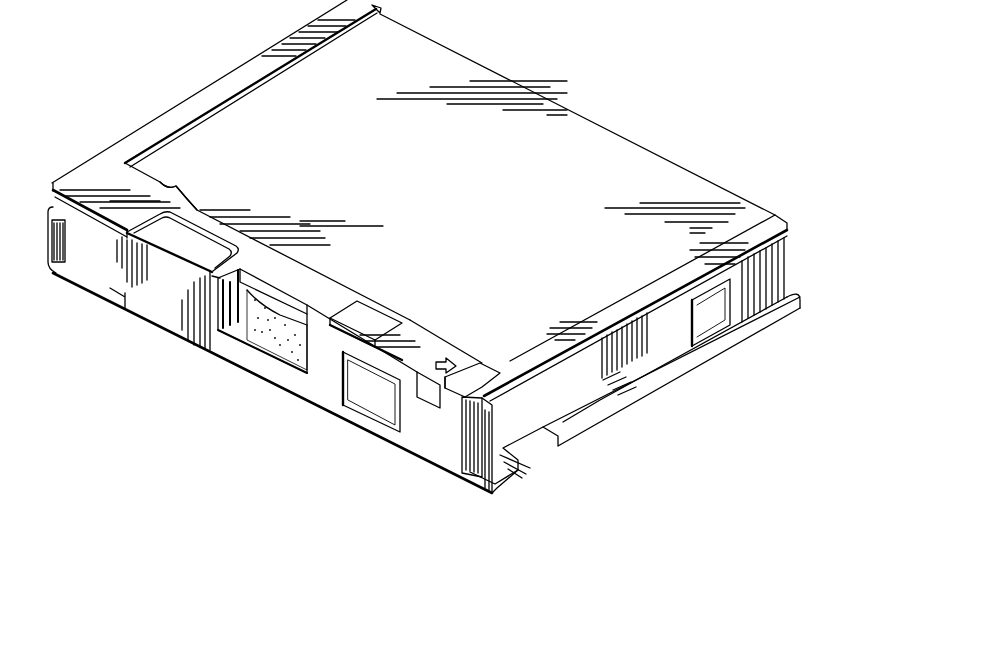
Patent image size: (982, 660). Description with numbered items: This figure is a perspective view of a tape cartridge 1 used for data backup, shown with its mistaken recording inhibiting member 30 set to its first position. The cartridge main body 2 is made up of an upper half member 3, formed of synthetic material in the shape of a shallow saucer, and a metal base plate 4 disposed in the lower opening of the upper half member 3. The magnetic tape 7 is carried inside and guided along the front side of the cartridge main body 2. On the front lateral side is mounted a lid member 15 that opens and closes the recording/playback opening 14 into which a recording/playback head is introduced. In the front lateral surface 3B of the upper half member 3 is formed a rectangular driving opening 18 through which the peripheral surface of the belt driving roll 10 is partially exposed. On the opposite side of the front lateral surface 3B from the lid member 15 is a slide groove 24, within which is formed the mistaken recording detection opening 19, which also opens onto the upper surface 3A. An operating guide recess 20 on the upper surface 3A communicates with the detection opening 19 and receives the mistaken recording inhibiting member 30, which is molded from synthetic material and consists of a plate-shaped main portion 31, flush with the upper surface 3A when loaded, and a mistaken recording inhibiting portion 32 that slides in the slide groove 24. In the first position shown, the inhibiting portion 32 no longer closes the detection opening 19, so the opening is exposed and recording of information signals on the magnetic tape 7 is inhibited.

The tape cartridge 1 is at (590, 72).
The cartridge main body 2 is at (846, 190).
The upper half member 3 is at (775, 215).
The upper surface 3A is at (645, 165).
The front lateral surface 3B is at (323, 380).
The base plate 4 is at (793, 307).
The magnetic tape 7 is at (262, 345).
The belt driving roll 10 is at (287, 333).
The recording/playback opening 14 is at (203, 217).
The lid member 15 is at (153, 308).
The driving opening 18 is at (230, 303).
The mistaken recording detection opening 19 is at (452, 417).
The operating guide recess 20 is at (487, 380).
The slide groove 24 is at (458, 418).
The mistaken recording inhibiting member 30 is at (443, 230).
The main portion 31 is at (387, 325).
The mistaken recording inhibiting portion 32 is at (425, 382).